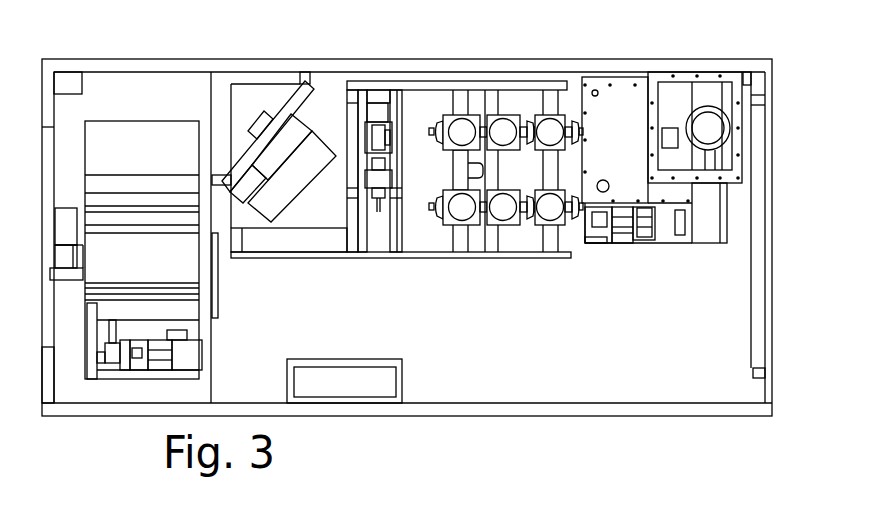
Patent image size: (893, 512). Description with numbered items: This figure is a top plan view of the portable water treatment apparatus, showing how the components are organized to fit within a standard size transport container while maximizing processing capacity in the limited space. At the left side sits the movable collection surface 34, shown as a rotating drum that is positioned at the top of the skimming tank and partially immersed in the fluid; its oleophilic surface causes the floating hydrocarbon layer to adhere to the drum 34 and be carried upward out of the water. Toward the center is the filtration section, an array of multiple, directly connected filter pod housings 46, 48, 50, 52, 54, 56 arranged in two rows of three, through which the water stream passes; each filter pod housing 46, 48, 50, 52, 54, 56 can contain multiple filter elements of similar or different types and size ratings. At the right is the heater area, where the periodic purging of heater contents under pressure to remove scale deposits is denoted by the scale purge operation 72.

The movable collection surface 34 is at (95, 268).
The filter pod housing 46 is at (464, 126).
The filter pod housing 48 is at (497, 131).
The filter pod housing 50 is at (547, 130).
The filter pod housing 52 is at (458, 208).
The filter pod housing 54 is at (500, 208).
The filter pod housing 56 is at (553, 202).
The scale purge operation 72 is at (683, 233).